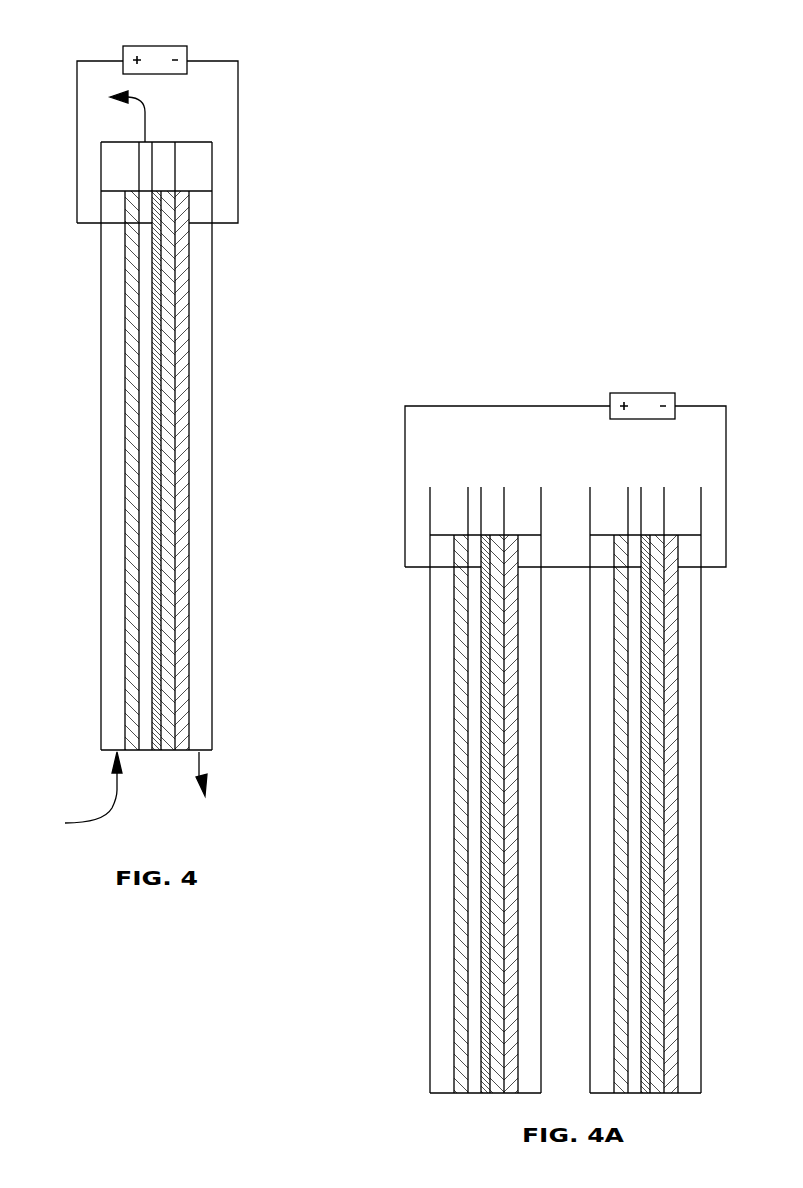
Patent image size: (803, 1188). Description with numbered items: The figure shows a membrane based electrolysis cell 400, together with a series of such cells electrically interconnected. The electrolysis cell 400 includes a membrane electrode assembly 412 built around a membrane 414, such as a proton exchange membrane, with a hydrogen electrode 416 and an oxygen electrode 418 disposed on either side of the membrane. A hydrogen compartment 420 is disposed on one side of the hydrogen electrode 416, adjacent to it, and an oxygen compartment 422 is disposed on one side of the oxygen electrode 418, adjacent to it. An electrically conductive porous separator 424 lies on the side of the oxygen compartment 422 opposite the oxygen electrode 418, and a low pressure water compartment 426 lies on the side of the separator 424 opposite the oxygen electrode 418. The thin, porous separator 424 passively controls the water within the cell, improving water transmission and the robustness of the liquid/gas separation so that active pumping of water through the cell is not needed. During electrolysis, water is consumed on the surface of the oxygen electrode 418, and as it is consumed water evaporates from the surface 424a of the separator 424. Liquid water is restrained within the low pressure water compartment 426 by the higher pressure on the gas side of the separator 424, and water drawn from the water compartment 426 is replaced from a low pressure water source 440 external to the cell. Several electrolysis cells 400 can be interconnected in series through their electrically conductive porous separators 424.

The electrolysis cell 400 is at (266, 116).
The membrane electrode assembly 412 is at (165, 492).
The membrane 414 is at (165, 355).
The hydrogen electrode 416 is at (183, 488).
The oxygen electrode 418 is at (158, 422).
The hydrogen compartment 420 is at (202, 592).
The oxygen compartment 422 is at (143, 285).
The electrically conductive porous separator 424 is at (132, 383).
The surface of the electrically conductive porous separator 424a is at (143, 618).
The low pressure water compartment 426 is at (115, 340).
The low pressure water source 440 is at (79, 794).